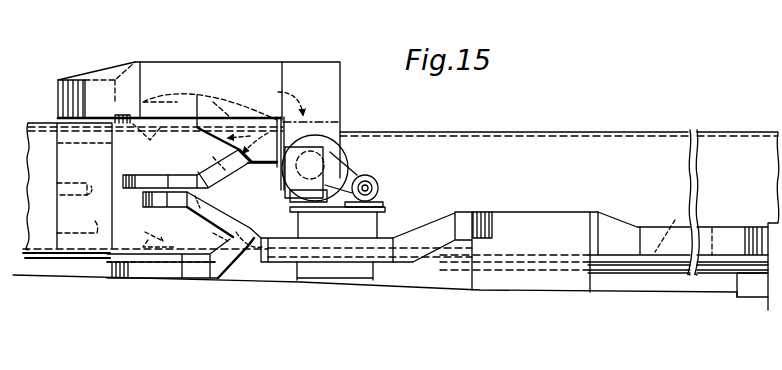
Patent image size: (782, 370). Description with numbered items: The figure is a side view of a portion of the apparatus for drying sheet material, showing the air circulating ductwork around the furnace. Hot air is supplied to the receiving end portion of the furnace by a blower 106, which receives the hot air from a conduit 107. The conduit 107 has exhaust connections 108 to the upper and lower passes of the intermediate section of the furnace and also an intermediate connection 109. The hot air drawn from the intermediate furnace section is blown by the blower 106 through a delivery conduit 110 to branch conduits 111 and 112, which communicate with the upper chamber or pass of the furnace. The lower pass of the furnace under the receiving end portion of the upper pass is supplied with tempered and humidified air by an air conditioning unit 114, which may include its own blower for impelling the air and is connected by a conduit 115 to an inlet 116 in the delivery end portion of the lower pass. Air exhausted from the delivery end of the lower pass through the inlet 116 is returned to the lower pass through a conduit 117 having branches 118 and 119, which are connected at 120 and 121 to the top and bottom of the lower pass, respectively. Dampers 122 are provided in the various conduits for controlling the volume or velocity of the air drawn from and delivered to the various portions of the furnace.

The blower 106 is at (345, 148).
The conduit 107 is at (232, 63).
The exhaust connection 108 is at (68, 190).
The intermediate connection 109 is at (74, 197).
The delivery conduit 110 is at (251, 165).
The branch conduit 111 is at (148, 140).
The branch conduit 112 is at (157, 178).
The air conditioning unit 114 is at (552, 212).
The conduit 115 is at (700, 228).
The inlet 116 is at (762, 215).
The conduit 117 is at (330, 245).
The branch 118 is at (220, 222).
The branch 119 is at (197, 275).
The connection 120 is at (157, 204).
The connection 121 is at (144, 233).
The damper 122 is at (426, 198).